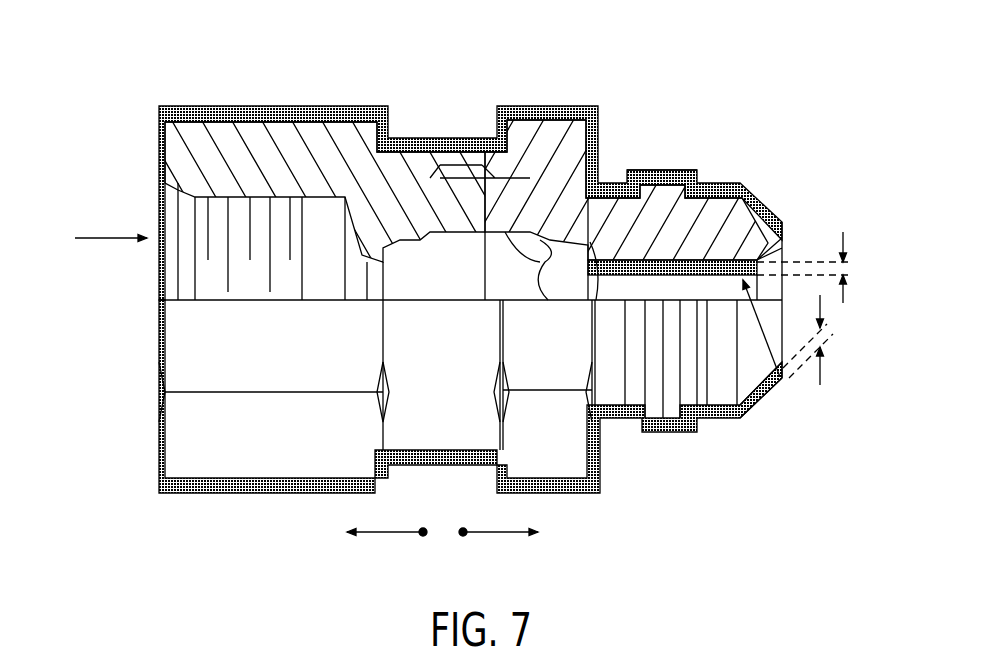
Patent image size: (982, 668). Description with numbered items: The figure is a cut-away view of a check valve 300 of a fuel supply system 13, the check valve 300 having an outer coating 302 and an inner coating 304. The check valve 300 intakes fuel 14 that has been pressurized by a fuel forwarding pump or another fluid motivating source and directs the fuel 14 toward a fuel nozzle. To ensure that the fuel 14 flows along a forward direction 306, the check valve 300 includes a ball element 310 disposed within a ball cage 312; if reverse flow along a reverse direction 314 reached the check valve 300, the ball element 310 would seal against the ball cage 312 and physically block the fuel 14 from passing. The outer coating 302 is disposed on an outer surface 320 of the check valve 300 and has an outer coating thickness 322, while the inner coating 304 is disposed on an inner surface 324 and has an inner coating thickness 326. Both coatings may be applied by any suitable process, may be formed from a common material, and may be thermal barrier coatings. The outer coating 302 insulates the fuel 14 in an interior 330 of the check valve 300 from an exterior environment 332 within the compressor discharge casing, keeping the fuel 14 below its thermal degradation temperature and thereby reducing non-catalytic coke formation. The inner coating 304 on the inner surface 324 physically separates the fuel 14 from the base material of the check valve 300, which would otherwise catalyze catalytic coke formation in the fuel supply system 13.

The fuel supply system 13 is at (492, 256).
The fuel 14 is at (103, 238).
The check valve 300 is at (441, 273).
The outer coating 302 is at (617, 284).
The inner coating 304 is at (778, 388).
The forward direction 306 is at (495, 535).
The ball element 310 is at (621, 183).
The ball cage 312 is at (515, 288).
The reverse direction 314 is at (393, 535).
The outer surface 320 is at (647, 171).
The outer coating thickness 322 is at (822, 368).
The inner surface 324 is at (743, 223).
The inner coating thickness 326 is at (843, 232).
The interior 330 is at (621, 285).
The exterior environment 332 is at (678, 547).